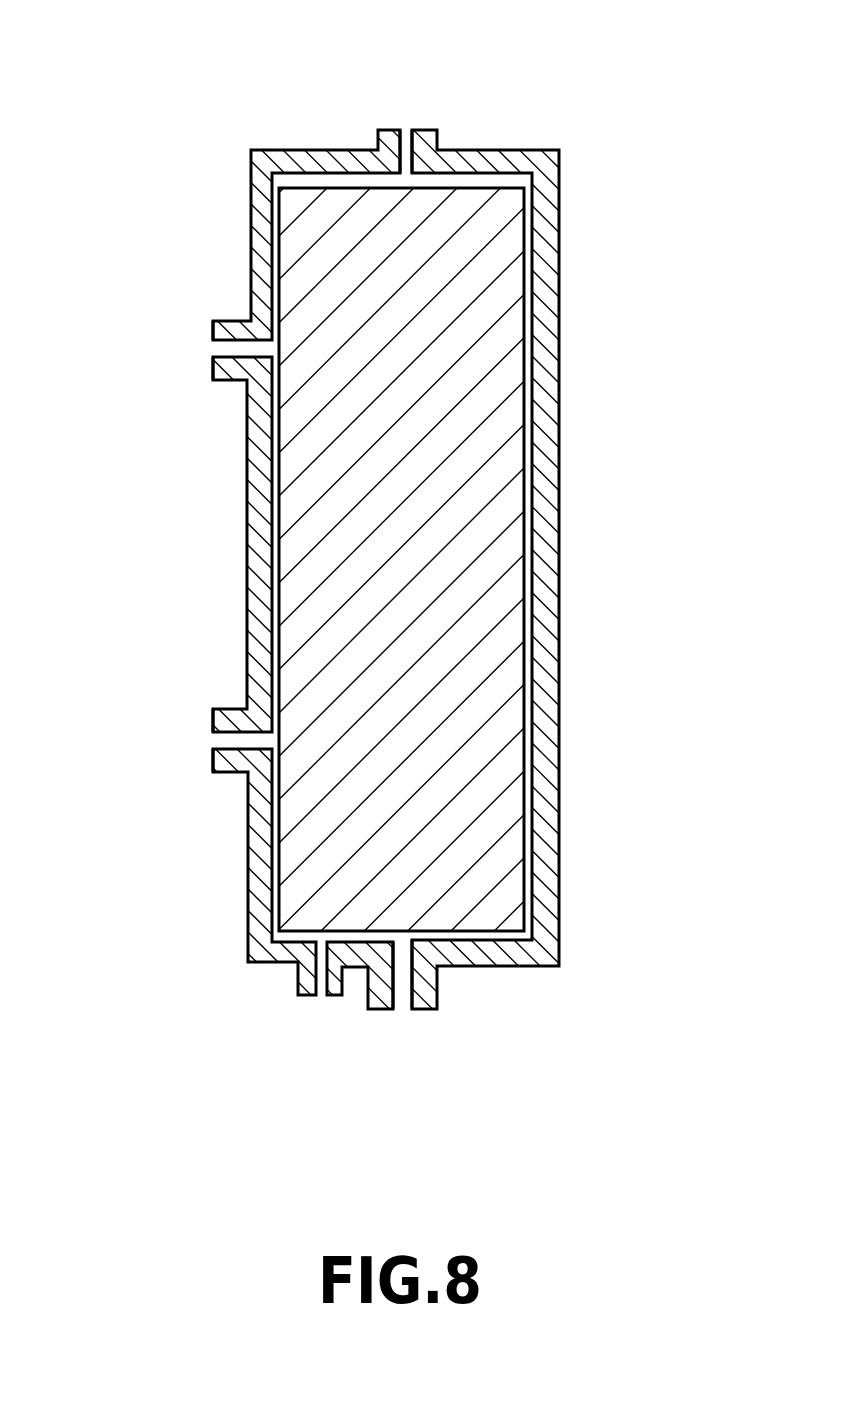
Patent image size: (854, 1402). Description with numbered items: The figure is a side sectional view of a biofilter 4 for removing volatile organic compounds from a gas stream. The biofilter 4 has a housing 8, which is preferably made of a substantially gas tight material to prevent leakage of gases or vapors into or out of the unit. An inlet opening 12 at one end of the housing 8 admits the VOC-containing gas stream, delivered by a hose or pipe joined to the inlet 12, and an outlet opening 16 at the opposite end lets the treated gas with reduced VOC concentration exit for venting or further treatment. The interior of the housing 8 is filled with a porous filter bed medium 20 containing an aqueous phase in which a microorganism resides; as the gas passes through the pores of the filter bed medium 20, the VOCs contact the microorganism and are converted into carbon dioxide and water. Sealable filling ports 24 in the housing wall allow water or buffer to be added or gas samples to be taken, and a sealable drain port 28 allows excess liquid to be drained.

The biofilter 4 is at (427, 553).
The housing 8 is at (560, 238).
The inlet opening 12 is at (404, 138).
The outlet opening 16 is at (403, 998).
The porous filter bed medium 20 is at (500, 708).
The filling ports 24 is at (227, 350).
The drain ports 28 is at (323, 985).